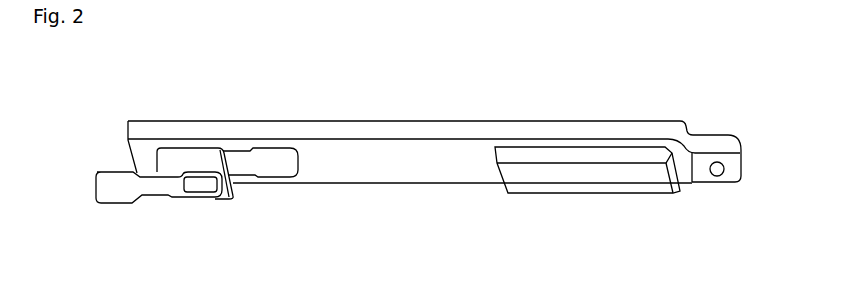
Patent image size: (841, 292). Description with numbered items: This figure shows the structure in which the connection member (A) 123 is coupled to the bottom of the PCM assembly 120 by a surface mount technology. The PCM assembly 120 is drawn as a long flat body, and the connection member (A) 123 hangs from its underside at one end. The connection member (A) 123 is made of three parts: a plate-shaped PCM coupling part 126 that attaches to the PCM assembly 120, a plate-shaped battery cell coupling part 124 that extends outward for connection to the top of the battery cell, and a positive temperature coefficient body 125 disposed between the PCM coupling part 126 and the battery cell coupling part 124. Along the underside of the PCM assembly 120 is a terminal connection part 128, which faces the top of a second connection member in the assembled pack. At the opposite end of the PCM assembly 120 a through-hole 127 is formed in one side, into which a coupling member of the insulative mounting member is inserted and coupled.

The PCM assembly 120 is at (328, 125).
The connection member (A) 123 is at (116, 160).
The plate-shaped battery cell coupling part 124 is at (115, 190).
The positive temperature coefficient (PTC) body 125 is at (190, 156).
The plate-shaped PCM coupling part 126 is at (265, 163).
The through-hole 127 is at (709, 172).
The terminal connection part 128 is at (445, 168).